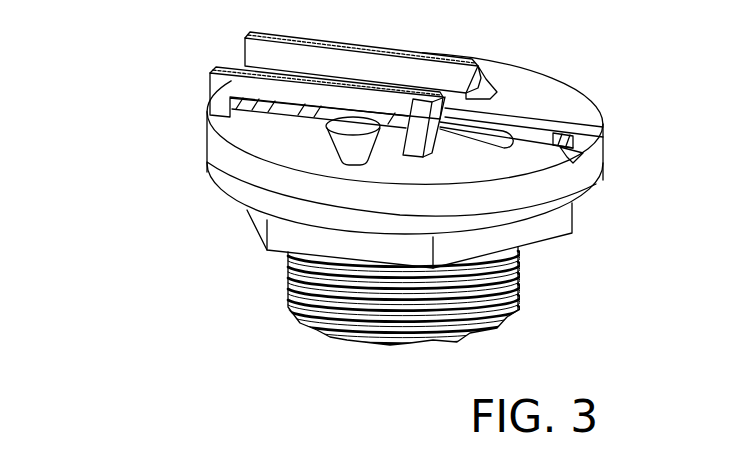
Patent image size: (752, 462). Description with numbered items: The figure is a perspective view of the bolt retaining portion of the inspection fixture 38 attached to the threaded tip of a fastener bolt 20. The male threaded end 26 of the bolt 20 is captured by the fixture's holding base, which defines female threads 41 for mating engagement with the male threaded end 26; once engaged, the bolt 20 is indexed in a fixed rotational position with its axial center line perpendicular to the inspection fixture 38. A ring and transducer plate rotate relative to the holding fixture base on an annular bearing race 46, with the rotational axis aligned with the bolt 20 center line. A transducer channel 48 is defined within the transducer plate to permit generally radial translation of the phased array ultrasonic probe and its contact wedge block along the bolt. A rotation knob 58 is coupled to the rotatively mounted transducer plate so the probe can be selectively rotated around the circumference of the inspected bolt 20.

The fastener bolt 20 is at (580, 287).
The male threaded end 26 is at (355, 308).
The inspection fixture 38 is at (150, 146).
The female threads 41 is at (500, 145).
The annular bearing race 46 is at (603, 138).
The transducer channel 48 is at (547, 127).
The rotation knob 58 is at (347, 150).